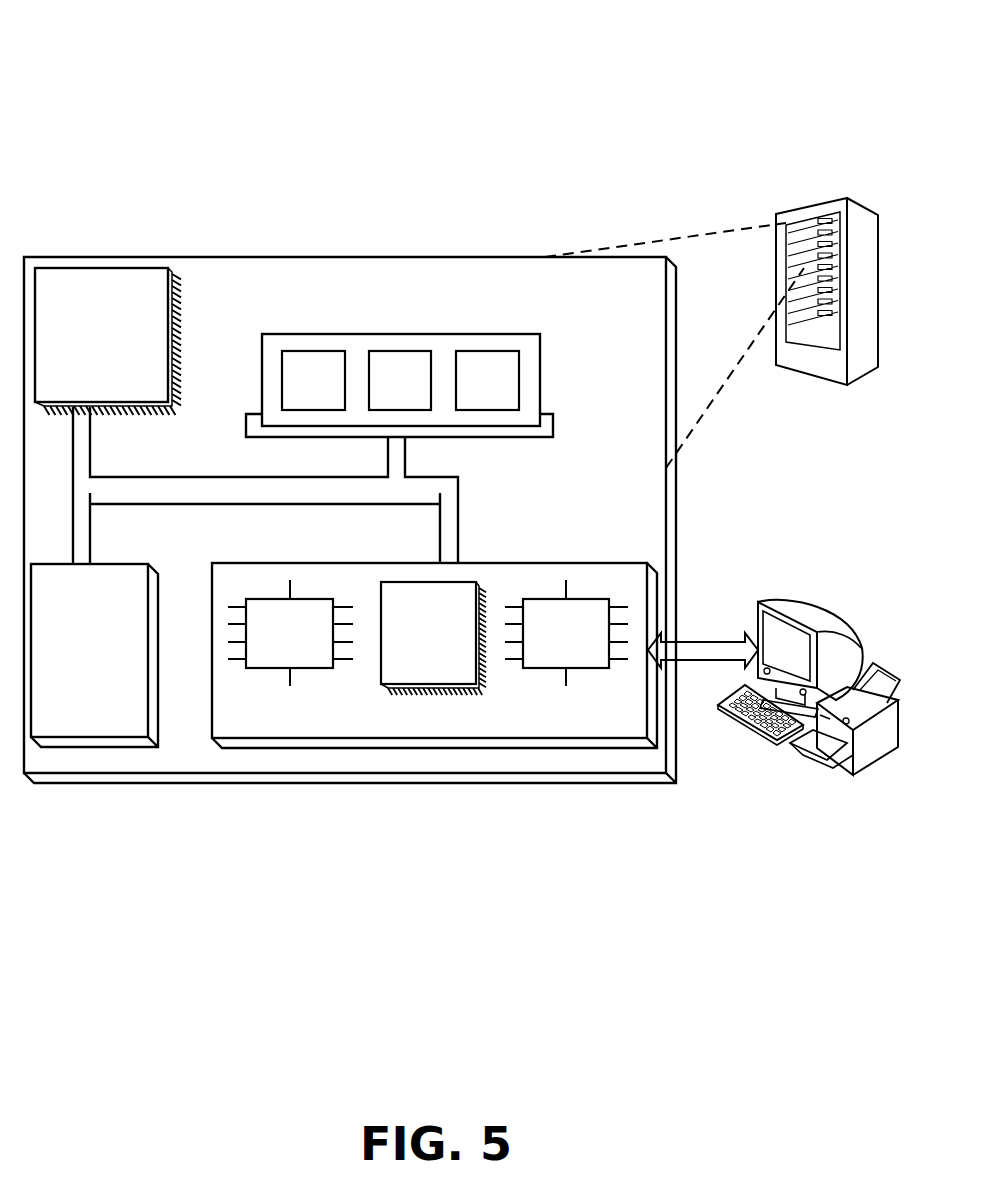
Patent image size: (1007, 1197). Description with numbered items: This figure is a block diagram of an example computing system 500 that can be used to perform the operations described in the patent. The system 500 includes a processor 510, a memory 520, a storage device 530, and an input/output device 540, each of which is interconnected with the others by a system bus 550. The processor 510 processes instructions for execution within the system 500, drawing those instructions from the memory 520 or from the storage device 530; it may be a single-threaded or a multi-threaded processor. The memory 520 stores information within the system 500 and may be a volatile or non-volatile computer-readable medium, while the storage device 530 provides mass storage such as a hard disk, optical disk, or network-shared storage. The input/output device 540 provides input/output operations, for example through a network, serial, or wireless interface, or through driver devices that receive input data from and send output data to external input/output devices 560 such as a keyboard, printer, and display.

The computing system 500 is at (119, 52).
The processor 510 is at (157, 396).
The memory 520 is at (541, 382).
The storage device 530 is at (127, 723).
The input/output device 540 is at (616, 563).
The system bus 550 is at (259, 494).
The input/output devices 560 is at (757, 605).